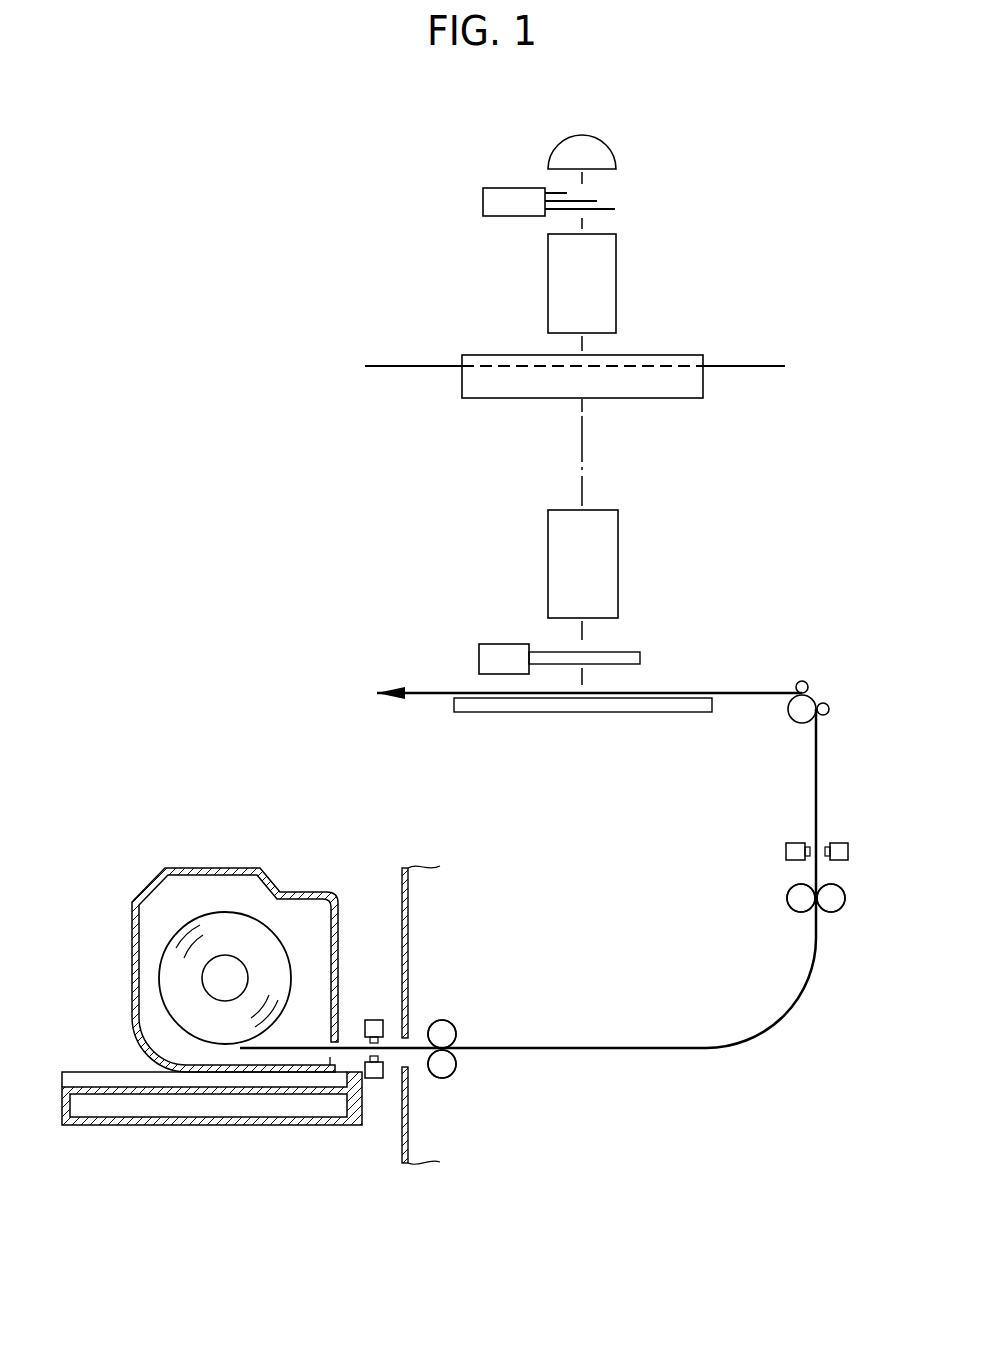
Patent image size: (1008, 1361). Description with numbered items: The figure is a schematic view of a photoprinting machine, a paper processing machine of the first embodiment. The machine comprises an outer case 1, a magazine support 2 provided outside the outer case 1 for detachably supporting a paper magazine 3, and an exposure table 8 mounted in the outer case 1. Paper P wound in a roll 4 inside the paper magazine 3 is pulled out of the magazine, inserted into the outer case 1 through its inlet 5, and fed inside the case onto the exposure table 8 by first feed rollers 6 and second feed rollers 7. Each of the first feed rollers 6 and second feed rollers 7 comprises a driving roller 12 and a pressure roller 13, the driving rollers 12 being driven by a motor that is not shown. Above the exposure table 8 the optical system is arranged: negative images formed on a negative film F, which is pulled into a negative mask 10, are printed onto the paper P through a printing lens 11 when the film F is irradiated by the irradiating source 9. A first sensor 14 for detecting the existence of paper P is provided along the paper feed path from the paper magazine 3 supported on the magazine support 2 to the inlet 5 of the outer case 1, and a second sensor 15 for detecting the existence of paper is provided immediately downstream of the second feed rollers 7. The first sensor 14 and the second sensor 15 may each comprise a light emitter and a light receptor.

The outer case 1 is at (402, 890).
The magazine support 2 is at (92, 1058).
The paper magazine 3 is at (203, 866).
The roll 4 is at (175, 955).
The inlet 5 is at (405, 1058).
The first feed rollers 6 is at (459, 1017).
The second feed rollers 7 is at (775, 897).
The exposure table 8 is at (664, 713).
The irradiating source 9 is at (590, 150).
The negative mask 10 is at (488, 388).
The printing lens 11 is at (556, 549).
The driving roller 12 is at (797, 905).
The pressure roller 13 is at (836, 905).
The first sensor 14 is at (387, 1015).
The second sensor 15 is at (785, 836).
The negative film F is at (420, 364).
The paper P is at (767, 1030).